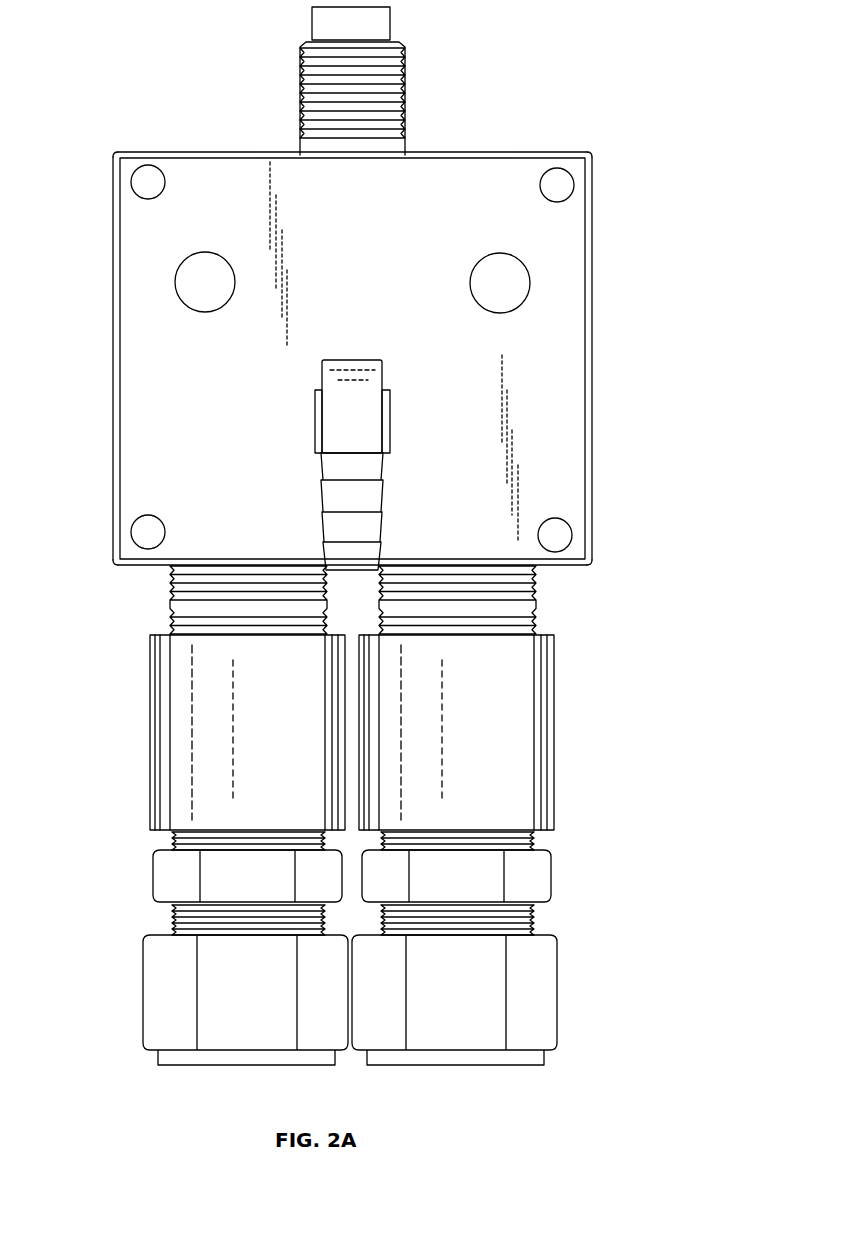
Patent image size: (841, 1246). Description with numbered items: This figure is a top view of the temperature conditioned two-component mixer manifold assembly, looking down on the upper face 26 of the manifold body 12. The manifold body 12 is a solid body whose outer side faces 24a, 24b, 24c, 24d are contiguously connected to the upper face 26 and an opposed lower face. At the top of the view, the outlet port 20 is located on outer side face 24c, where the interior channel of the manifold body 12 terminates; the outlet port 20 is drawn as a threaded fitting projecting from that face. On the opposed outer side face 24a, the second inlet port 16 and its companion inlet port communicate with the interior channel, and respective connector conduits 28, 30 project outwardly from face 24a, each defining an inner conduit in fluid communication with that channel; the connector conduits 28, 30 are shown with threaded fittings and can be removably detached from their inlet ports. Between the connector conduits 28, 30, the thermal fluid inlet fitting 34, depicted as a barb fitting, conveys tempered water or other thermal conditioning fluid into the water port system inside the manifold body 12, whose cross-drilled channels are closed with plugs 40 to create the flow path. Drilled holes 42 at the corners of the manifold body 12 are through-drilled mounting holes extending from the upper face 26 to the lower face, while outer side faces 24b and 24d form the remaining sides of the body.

The manifold body 12 is at (455, 380).
The second inlet port 16 is at (172, 567).
The outlet port 20 is at (392, 28).
The outer side face 24a is at (565, 568).
The outer side face 24b is at (598, 342).
The outer side face 24c is at (525, 150).
The outer side face 24d is at (113, 383).
The upper face 26 is at (555, 450).
The connector conduit 28 is at (555, 733).
The connector conduit 30 is at (150, 728).
The thermal fluid inlet fitting 34 is at (322, 463).
The plug 40 is at (205, 285).
The drilled hole 42 is at (138, 182).